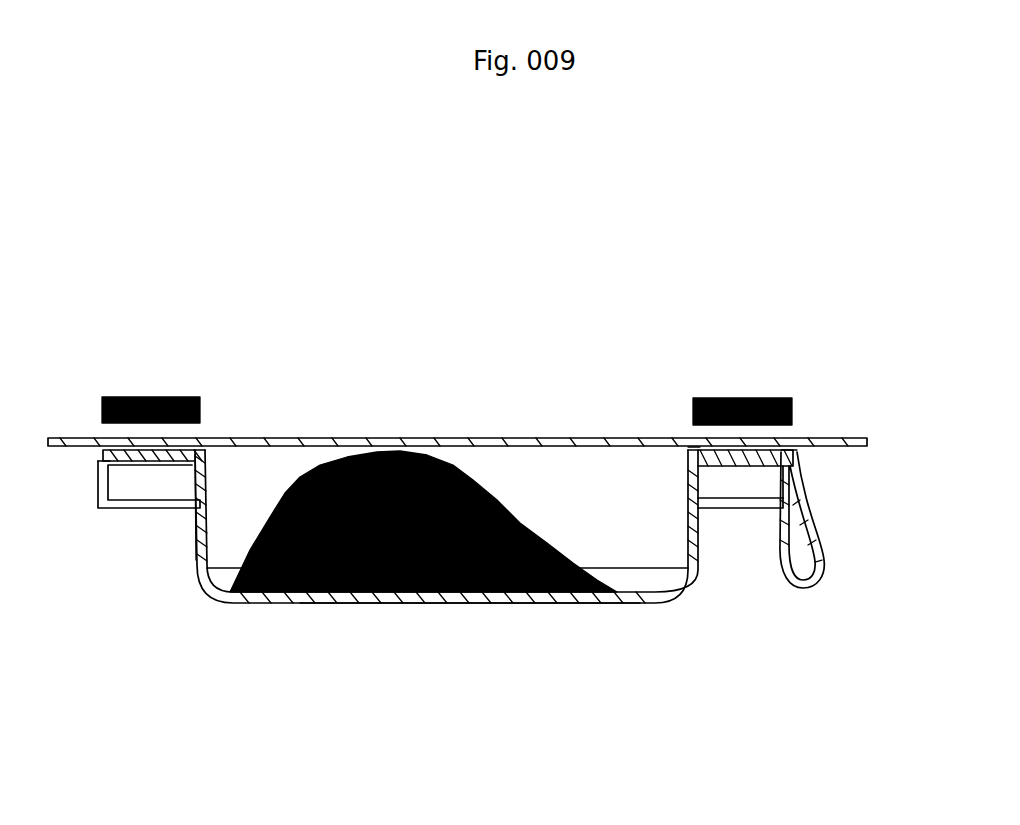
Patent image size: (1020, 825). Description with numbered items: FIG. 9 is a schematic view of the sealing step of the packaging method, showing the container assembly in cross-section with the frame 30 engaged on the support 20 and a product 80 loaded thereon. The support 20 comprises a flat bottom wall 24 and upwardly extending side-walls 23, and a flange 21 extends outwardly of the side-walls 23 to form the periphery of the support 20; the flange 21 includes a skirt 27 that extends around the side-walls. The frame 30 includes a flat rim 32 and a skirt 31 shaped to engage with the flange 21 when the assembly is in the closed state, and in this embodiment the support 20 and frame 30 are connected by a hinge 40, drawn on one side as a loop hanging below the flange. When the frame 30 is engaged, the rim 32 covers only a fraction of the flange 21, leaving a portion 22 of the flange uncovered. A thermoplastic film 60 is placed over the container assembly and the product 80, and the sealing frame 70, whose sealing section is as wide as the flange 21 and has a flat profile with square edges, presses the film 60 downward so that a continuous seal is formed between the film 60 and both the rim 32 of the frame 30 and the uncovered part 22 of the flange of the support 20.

The support 20 is at (650, 580).
The flange 21 is at (740, 467).
The uncovered portion of flange 22 is at (697, 448).
The side-walls 23 is at (202, 560).
The bottom wall 24 is at (570, 597).
The skirt 27 is at (112, 480).
The frame 30 is at (797, 473).
The skirt 31 is at (97, 487).
The rim 32 is at (780, 440).
The hinge 40 is at (817, 582).
The thermoplastic film 60 is at (268, 437).
The sealing frame 70 is at (158, 397).
The product 80 is at (293, 593).